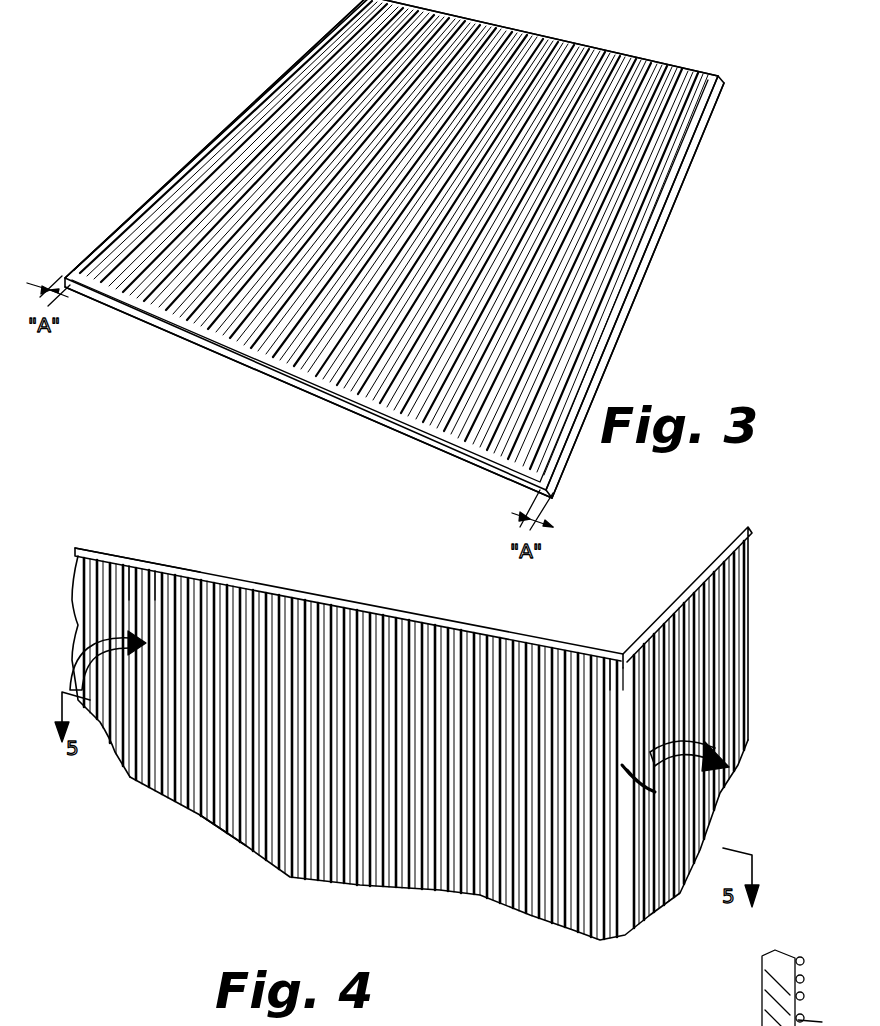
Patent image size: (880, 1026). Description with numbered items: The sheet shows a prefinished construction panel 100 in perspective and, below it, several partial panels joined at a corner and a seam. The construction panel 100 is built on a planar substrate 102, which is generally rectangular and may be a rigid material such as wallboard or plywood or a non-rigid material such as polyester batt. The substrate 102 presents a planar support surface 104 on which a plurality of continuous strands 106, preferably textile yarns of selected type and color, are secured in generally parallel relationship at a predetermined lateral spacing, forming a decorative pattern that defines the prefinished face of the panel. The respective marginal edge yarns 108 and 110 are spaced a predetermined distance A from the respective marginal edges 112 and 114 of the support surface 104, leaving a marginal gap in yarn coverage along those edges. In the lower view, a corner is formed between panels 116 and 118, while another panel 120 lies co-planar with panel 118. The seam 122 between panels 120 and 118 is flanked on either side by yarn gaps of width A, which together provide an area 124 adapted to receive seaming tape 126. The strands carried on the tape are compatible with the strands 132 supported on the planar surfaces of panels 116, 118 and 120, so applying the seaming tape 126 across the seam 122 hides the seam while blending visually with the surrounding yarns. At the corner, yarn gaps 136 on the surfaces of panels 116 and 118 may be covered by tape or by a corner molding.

In FIG. 3, the construction panel 100 is at (664, 294).
In FIG. 3, the planar substrate 102 is at (358, 412).
In FIG. 3, the planar support surface 104 is at (213, 143).
In FIG. 3, the continuous strands 106 is at (636, 50).
In FIG. 3, the marginal edge yarn 108 is at (285, 82).
In FIG. 3, the marginal edge yarn 110 is at (680, 143).
In FIG. 3, the marginal edge 112 is at (115, 230).
In FIG. 3, the marginal edge 114 is at (673, 193).
In FIG. 4, the panel 116 is at (658, 612).
In FIG. 4, the panel 118 is at (390, 608).
In FIG. 4, the panel 120 is at (95, 548).
In FIG. 4, the seam 122 is at (178, 593).
In FIG. 4, the area 124 is at (170, 557).
In FIG. 4, the seaming tape 126 is at (72, 672).
In FIG. 4, the strands 132 is at (197, 805).
In FIG. 4, the yarn gaps 136 is at (623, 652).